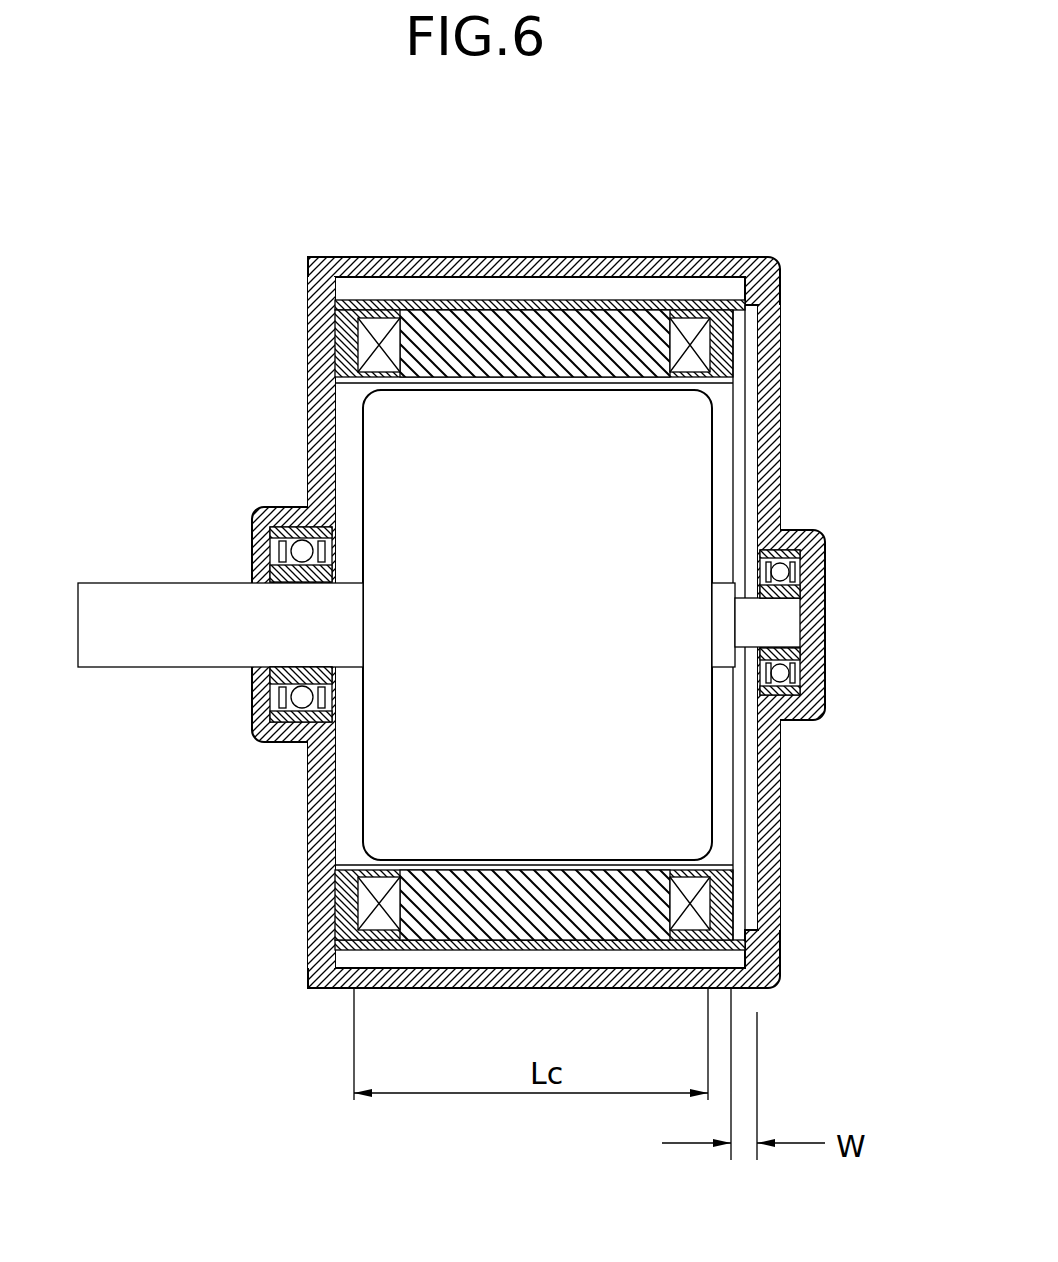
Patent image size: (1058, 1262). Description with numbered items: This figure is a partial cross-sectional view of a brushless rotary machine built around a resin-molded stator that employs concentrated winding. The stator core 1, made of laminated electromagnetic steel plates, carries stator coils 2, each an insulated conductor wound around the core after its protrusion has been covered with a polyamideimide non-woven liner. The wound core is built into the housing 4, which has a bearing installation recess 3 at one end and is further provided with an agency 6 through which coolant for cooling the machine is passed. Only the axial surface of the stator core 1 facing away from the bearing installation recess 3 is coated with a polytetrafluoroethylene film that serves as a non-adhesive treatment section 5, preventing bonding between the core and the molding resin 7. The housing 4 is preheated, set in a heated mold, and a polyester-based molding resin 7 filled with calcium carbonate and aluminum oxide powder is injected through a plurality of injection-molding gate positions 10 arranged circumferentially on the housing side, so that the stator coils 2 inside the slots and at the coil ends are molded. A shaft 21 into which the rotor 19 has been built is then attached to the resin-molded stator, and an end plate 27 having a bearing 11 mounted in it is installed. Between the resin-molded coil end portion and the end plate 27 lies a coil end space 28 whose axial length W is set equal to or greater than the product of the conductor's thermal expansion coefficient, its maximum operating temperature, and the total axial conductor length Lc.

The stator core 1 is at (482, 340).
The stator coil 2 is at (340, 320).
The bearing installation recess 3 is at (251, 522).
The housing 4 is at (607, 257).
The non-adhesive treatment section 5 is at (663, 313).
The agency 6 is at (528, 292).
The molding resin 7 is at (310, 391).
The injection-molding gate position 10 is at (340, 905).
The bearing 11 is at (785, 645).
The rotor 19 is at (440, 537).
The shaft 21 is at (175, 612).
The end plate 27 is at (785, 318).
The coil end space 28 is at (742, 315).